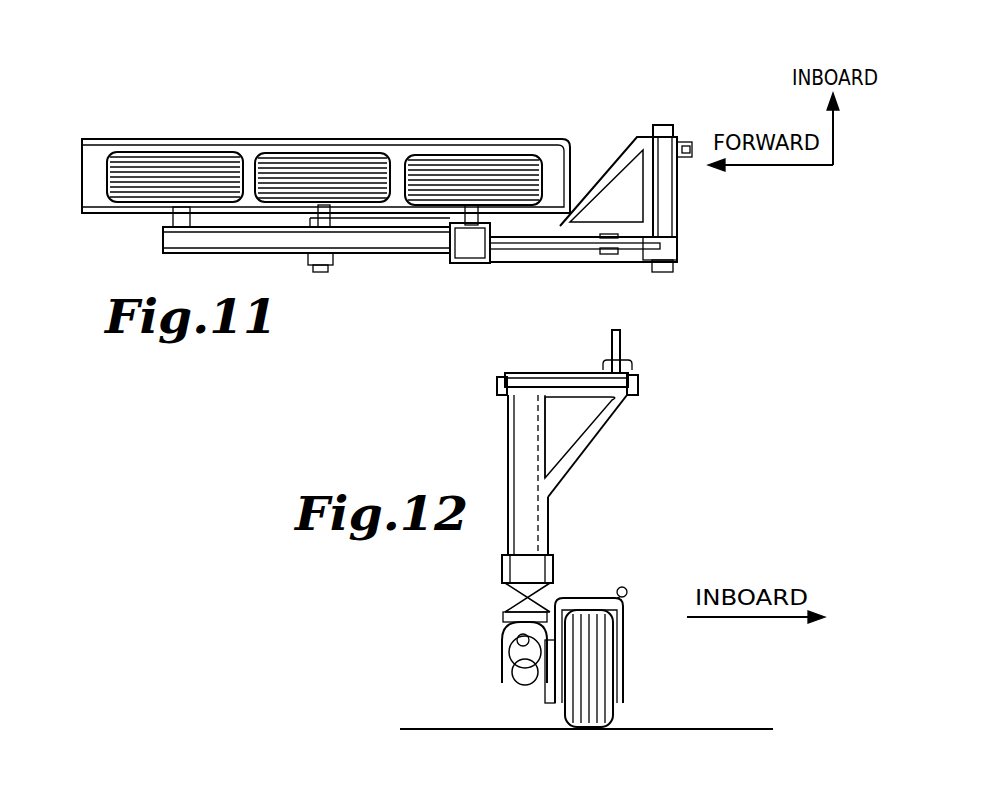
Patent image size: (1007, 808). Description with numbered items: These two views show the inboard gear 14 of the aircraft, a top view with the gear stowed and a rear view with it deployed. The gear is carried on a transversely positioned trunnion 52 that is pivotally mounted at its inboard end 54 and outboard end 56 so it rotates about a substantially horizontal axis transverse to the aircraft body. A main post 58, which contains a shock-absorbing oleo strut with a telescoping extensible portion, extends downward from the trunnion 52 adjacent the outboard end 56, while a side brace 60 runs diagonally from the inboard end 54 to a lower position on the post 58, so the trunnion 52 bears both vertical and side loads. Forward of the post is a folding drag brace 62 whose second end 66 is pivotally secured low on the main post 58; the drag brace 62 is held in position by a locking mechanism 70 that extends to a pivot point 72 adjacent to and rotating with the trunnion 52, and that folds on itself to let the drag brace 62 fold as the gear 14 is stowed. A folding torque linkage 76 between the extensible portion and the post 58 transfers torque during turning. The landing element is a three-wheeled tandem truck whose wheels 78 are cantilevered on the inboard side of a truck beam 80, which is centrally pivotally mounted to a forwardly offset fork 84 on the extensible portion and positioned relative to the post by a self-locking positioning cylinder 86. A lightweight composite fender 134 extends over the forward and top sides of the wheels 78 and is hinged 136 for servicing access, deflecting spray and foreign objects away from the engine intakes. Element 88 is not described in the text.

In FIG. 12, the inboard gear 14 is at (633, 540).
In FIG. 11, the trunnion 52 is at (672, 200).
In FIG. 12, the trunnion 52 is at (553, 373).
In FIG. 11, the inboard end 54 is at (662, 125).
In FIG. 12, the inboard end 54 is at (638, 383).
In FIG. 11, the outboard end 56 is at (665, 280).
In FIG. 12, the outboard end 56 is at (497, 387).
In FIG. 11, the main post 58 is at (570, 258).
In FIG. 12, the main post 58 is at (523, 428).
In FIG. 11, the side brace 60 is at (612, 158).
In FIG. 12, the side brace 60 is at (592, 443).
In FIG. 11, the folding drag brace 62 is at (547, 250).
In FIG. 11, the second end 66 is at (507, 255).
In FIG. 11, the locking mechanism 70 is at (633, 258).
In FIG. 11, the pivot point 72 is at (672, 233).
In FIG. 12, the folding torque linkage 76 is at (505, 593).
In FIG. 12, the wheels 78 is at (605, 728).
In FIG. 11, the truck beam 80 is at (208, 242).
In FIG. 12, the truck beam 80 is at (523, 677).
In FIG. 11, the fork 84 is at (353, 268).
In FIG. 12, the fork 84 is at (518, 645).
In FIG. 12, the positioning cylinder 86 is at (523, 637).
In FIG. 12, the locating pin 88 is at (620, 345).
In FIG. 11, the fender 134 is at (92, 193).
In FIG. 12, the fender 134 is at (625, 667).
In FIG. 12, the hinge 136 is at (625, 590).